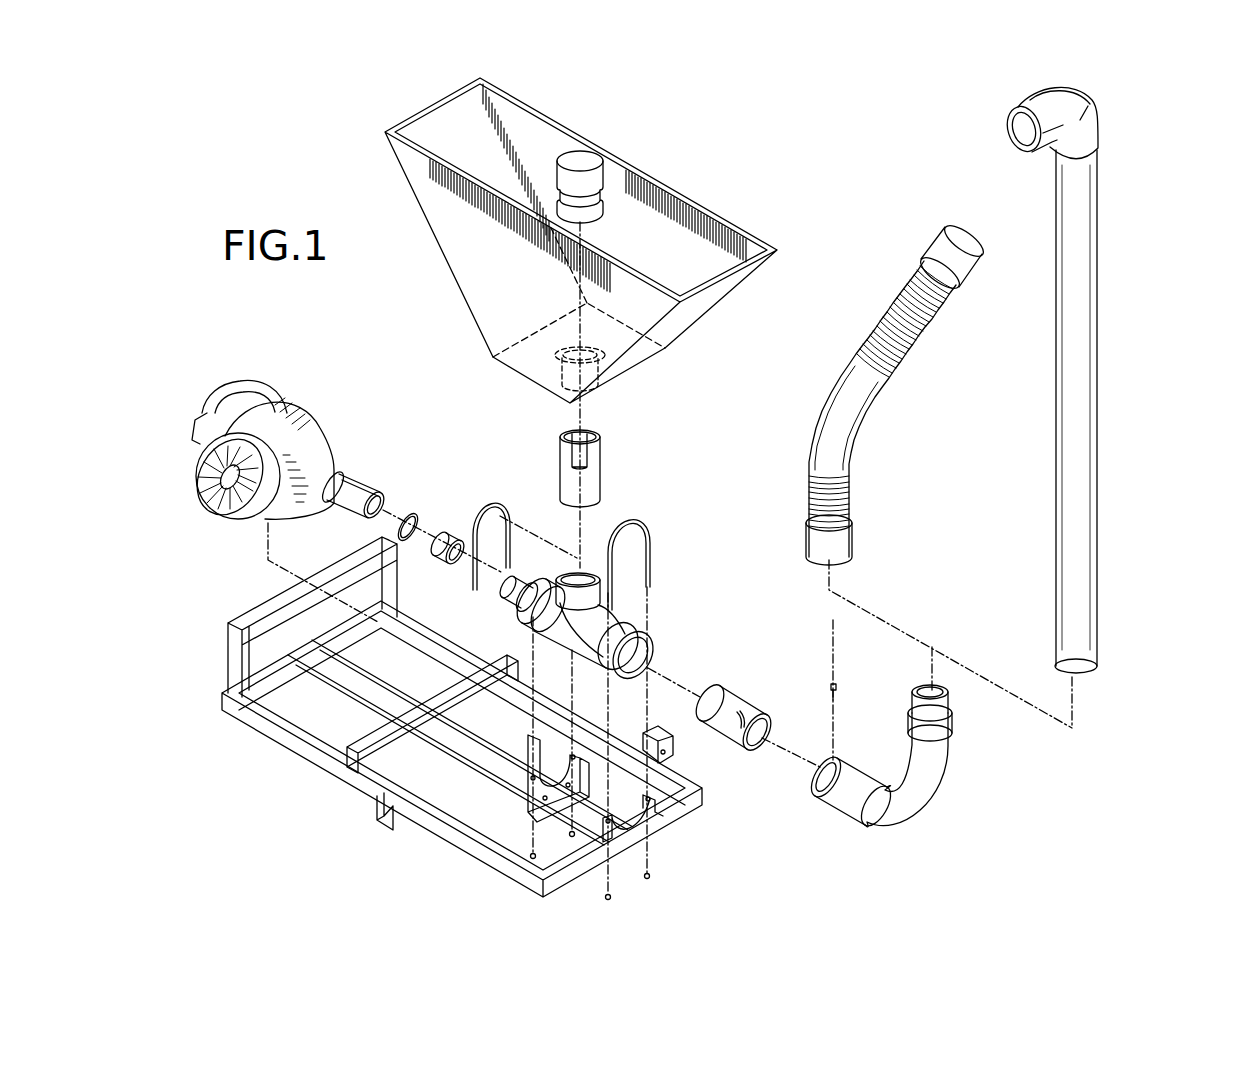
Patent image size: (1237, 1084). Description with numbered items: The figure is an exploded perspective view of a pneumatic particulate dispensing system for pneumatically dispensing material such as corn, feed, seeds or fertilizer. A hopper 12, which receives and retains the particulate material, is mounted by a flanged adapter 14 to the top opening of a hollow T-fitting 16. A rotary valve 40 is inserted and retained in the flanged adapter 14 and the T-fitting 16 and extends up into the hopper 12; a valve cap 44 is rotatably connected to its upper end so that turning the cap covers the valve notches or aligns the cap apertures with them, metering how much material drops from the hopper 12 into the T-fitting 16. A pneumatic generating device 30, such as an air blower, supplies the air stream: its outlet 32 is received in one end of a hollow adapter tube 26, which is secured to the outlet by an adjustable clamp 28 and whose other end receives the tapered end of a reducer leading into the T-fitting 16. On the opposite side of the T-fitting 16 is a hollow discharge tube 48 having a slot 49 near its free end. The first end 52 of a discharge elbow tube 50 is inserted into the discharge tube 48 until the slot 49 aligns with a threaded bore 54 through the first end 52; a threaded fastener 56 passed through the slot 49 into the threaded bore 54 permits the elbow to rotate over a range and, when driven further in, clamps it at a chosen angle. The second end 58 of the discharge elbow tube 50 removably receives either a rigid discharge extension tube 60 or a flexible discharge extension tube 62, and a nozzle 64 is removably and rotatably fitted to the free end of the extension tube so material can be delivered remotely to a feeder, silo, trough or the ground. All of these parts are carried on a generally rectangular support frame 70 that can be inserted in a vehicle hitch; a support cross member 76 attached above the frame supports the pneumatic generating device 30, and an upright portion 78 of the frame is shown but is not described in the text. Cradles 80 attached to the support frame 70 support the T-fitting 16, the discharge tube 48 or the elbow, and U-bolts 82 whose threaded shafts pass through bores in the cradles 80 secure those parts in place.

The hopper 12 is at (710, 207).
The flanged adapter 14 is at (553, 388).
The T-fitting 16 is at (590, 567).
The adapter tube 26 is at (437, 533).
The adjustable clamp 28 is at (402, 508).
The pneumatic generating device 30 is at (310, 418).
The blower nozzle 32 is at (363, 480).
The rotary valve 40 is at (602, 463).
The valve cap 44 is at (583, 160).
The discharge tube 48 is at (720, 687).
The slot 49 is at (741, 692).
The discharge elbow tube 50 is at (912, 805).
The first end 52 is at (820, 797).
The threaded bore 54 is at (832, 755).
The threaded fastener 56 is at (835, 680).
The second end 58 is at (953, 703).
The rigid discharge extension tube 60 is at (1097, 403).
The flexible discharge extension tube 62 is at (860, 428).
The nozzle 64 is at (1098, 120).
The support frame 70 is at (287, 748).
The support cross member 76 is at (387, 726).
The upright rail 78 is at (260, 602).
The cradle 80 is at (527, 790).
The U-bolt 82 is at (497, 508).